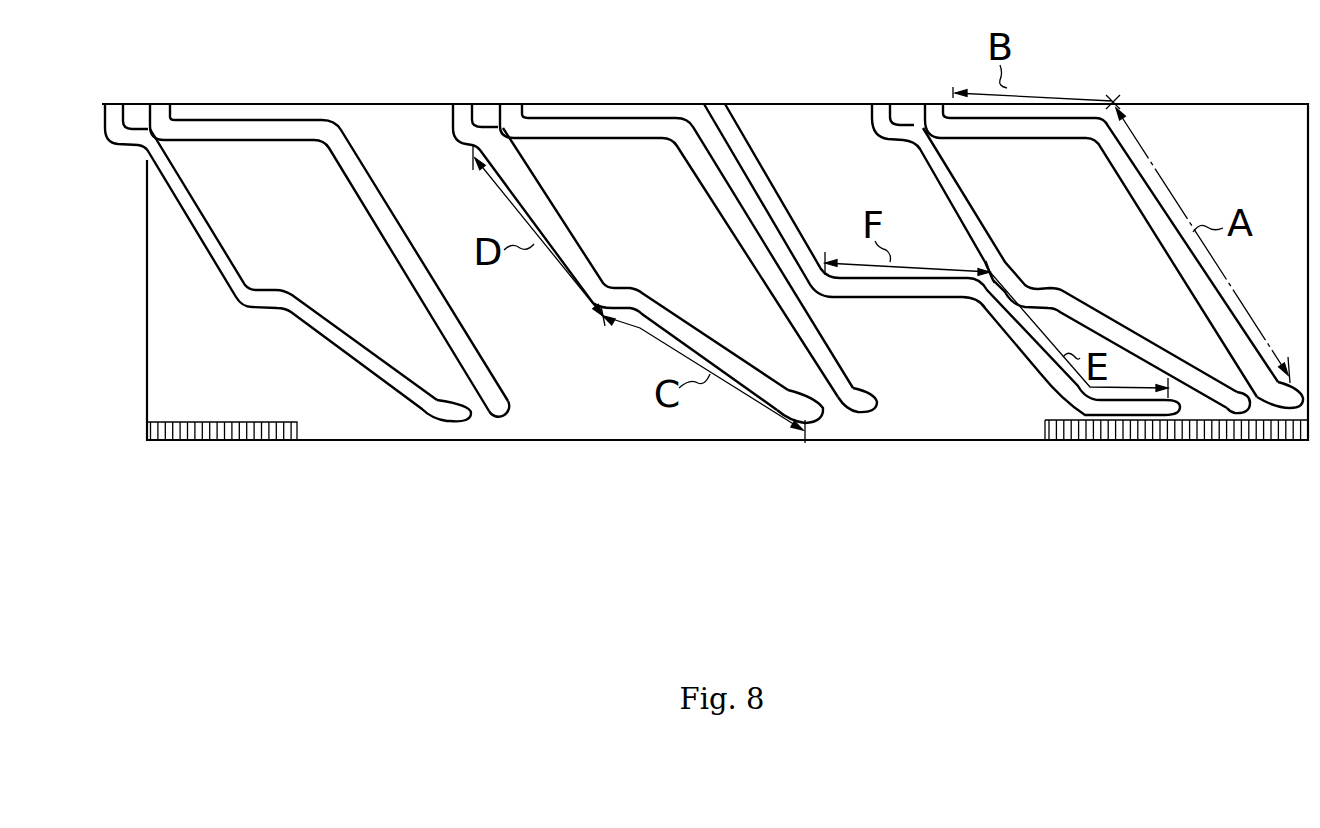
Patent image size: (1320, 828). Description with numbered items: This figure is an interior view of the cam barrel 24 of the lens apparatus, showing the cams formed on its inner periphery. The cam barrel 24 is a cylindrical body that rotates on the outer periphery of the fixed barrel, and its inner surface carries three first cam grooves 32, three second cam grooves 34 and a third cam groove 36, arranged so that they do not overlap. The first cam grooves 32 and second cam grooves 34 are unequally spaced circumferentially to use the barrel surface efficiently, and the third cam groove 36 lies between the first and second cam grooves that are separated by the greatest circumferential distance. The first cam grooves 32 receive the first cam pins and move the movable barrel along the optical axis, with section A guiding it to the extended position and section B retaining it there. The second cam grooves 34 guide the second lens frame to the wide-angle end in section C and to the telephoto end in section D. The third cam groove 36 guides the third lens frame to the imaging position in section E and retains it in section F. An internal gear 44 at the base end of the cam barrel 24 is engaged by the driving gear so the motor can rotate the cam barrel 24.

The cam barrel 24 is at (383, 135).
The first cam grooves 32 is at (265, 112).
The second cam grooves 34 is at (179, 175).
The third cam groove 36 is at (755, 153).
The internal gear 44 is at (1126, 440).